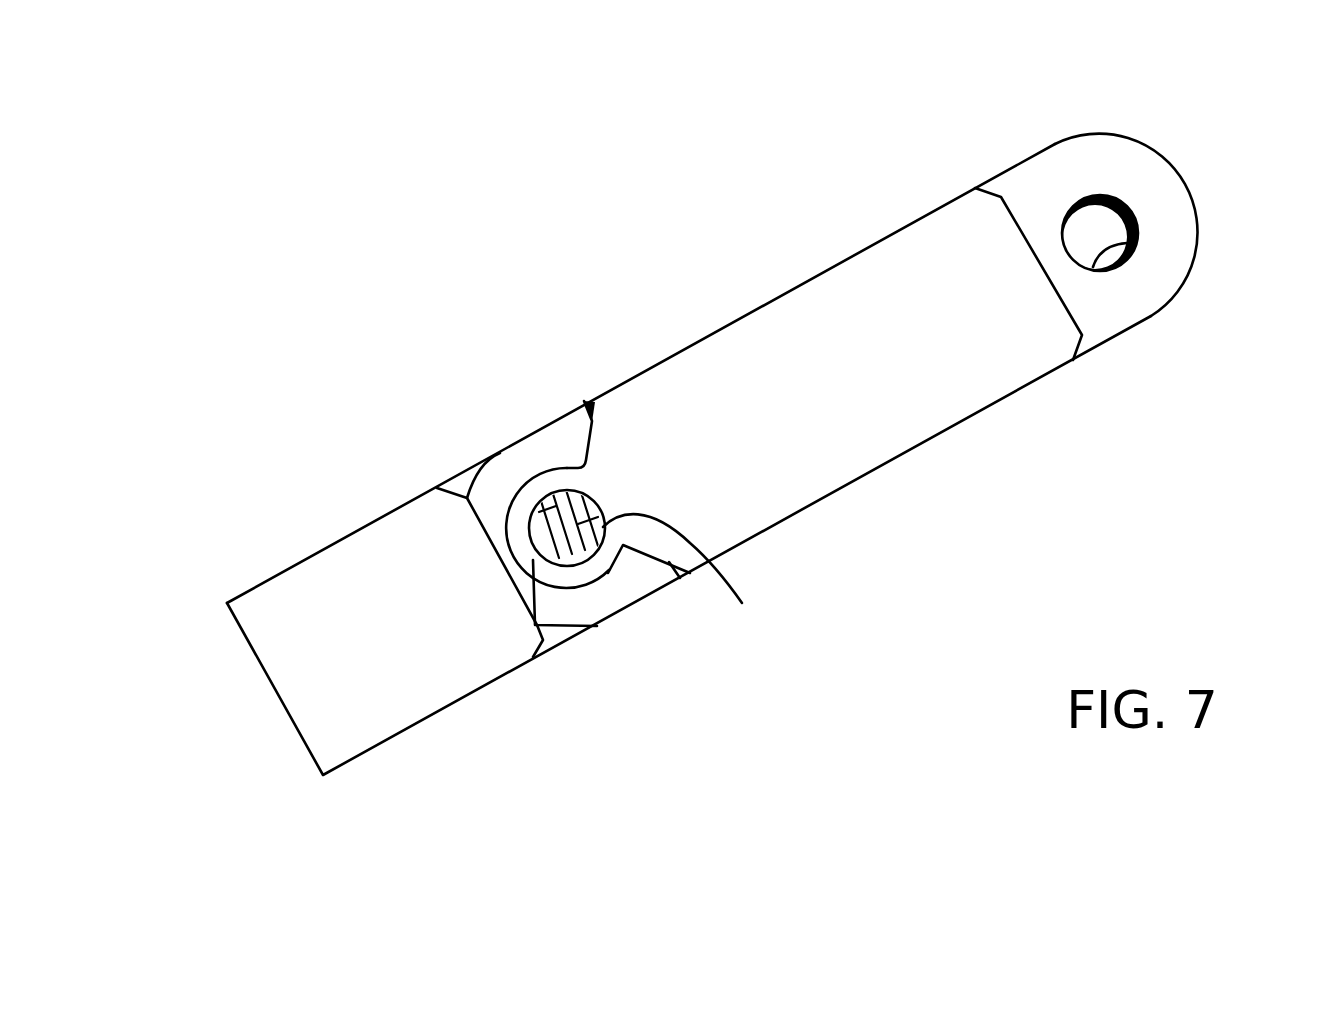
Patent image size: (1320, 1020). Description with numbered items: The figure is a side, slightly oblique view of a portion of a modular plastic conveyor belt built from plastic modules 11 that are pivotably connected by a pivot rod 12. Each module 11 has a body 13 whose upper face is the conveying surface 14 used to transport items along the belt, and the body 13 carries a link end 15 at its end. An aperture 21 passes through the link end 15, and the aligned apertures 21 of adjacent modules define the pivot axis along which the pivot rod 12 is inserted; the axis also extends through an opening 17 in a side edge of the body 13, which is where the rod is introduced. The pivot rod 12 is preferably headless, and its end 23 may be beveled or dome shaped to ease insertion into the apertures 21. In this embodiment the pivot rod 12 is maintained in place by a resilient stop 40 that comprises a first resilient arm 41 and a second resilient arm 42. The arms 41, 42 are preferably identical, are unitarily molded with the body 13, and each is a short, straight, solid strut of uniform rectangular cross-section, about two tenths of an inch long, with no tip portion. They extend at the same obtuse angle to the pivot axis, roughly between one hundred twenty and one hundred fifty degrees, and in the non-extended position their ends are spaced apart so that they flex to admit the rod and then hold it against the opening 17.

The plastic module 11 is at (465, 680).
The pivot rod 12 is at (549, 497).
The body 13 is at (355, 727).
The conveying surface 14 is at (300, 562).
The link end 15 is at (1176, 183).
The opening 17 is at (613, 557).
The aperture 21 is at (1130, 247).
The first end of pivot rod 23 is at (553, 530).
The resilient stop 40 is at (596, 498).
The first resilient arm 41 is at (692, 579).
The second resilient arm 42 is at (537, 625).